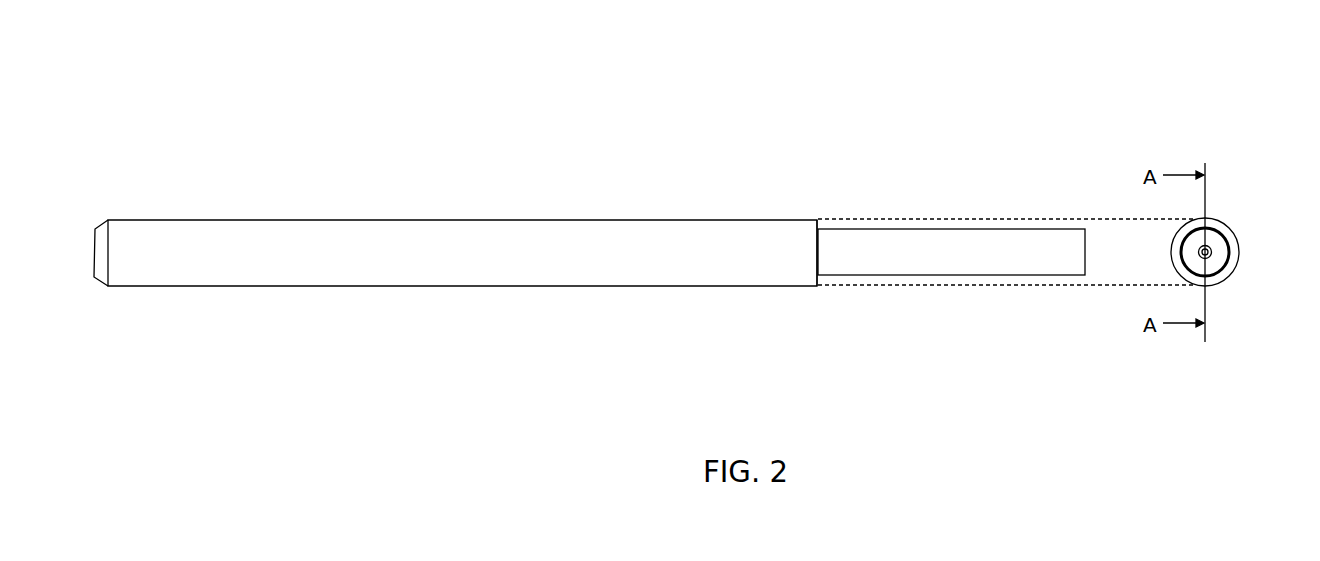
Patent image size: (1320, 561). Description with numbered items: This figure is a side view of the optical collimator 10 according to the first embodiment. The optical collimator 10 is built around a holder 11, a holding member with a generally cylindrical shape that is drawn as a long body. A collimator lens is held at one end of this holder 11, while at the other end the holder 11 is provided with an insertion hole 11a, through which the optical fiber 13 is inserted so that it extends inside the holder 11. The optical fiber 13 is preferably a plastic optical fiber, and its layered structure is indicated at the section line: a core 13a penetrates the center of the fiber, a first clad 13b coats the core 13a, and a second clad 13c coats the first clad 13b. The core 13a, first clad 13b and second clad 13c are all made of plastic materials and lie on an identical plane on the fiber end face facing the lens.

The optical collimator 10 is at (229, 38).
The holder 11 is at (520, 220).
The insertion hole 11a is at (829, 217).
The optical fiber 13 is at (961, 228).
The core 13a is at (1212, 256).
The first clad 13b is at (1218, 270).
The second clad 13c is at (1229, 236).